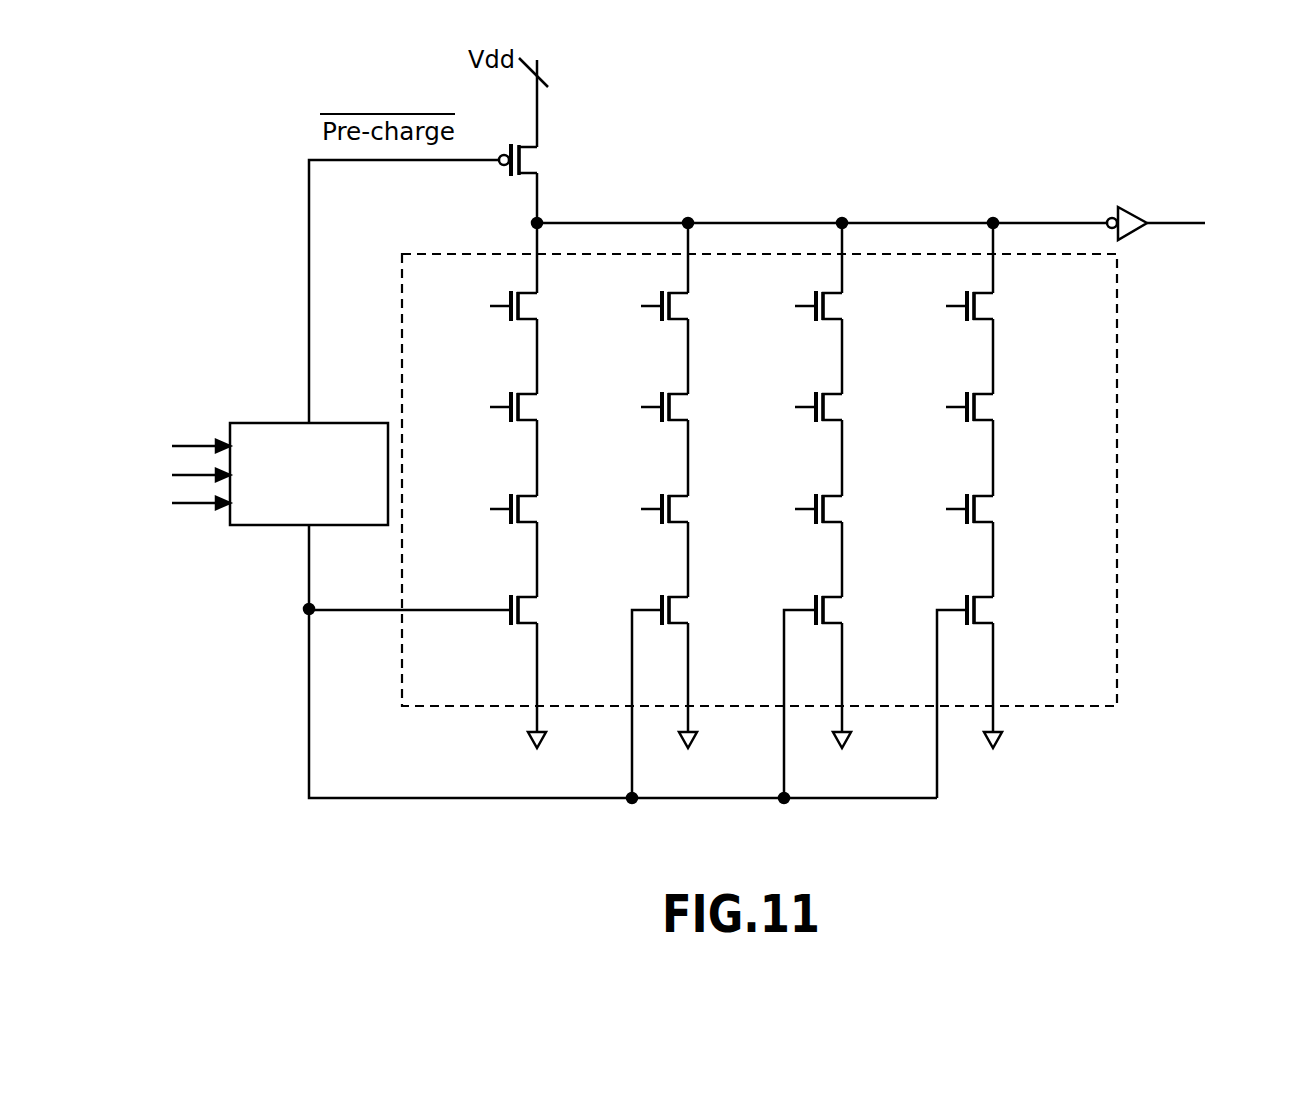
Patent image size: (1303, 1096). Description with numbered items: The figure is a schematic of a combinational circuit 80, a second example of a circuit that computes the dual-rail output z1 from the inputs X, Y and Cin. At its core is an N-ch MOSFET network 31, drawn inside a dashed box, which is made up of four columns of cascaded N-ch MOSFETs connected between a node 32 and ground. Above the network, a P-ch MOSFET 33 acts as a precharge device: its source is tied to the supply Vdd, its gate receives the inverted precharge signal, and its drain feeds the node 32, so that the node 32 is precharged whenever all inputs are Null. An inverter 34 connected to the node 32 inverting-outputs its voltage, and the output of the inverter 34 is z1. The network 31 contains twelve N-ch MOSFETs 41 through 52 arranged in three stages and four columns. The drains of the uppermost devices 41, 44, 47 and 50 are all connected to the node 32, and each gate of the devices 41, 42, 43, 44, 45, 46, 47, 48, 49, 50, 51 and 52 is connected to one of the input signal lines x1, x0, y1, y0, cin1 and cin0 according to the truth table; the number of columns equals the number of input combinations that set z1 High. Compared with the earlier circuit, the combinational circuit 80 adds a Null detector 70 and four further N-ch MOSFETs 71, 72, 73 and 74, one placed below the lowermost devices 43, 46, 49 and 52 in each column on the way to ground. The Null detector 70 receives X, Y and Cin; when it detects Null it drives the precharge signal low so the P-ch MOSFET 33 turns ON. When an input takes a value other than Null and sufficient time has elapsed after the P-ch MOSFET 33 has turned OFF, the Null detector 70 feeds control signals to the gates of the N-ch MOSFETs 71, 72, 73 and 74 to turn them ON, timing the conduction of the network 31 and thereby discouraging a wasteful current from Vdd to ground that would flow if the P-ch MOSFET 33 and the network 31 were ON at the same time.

The combinational circuit 80 is at (901, 105).
The Null detector 70 is at (264, 423).
The P-ch MOSFET 33 is at (531, 159).
The node 32 is at (866, 223).
The inverter 34 is at (1133, 213).
The N-ch MOSFET network 31 is at (1117, 478).
The N-ch MOSFET 41 is at (531, 305).
The N-ch MOSFET 42 is at (531, 406).
The N-ch MOSFET 43 is at (531, 508).
The N-ch MOSFET 44 is at (682, 305).
The N-ch MOSFET 45 is at (682, 406).
The N-ch MOSFET 46 is at (682, 508).
The N-ch MOSFET 47 is at (836, 305).
The N-ch MOSFET 48 is at (836, 406).
The N-ch MOSFET 49 is at (836, 508).
The N-ch MOSFET 50 is at (987, 305).
The N-ch MOSFET 51 is at (987, 406).
The N-ch MOSFET 52 is at (987, 508).
The N-ch MOSFET 71 is at (531, 609).
The N-ch MOSFET 72 is at (682, 609).
The N-ch MOSFET 73 is at (836, 609).
The N-ch MOSFET 74 is at (987, 609).